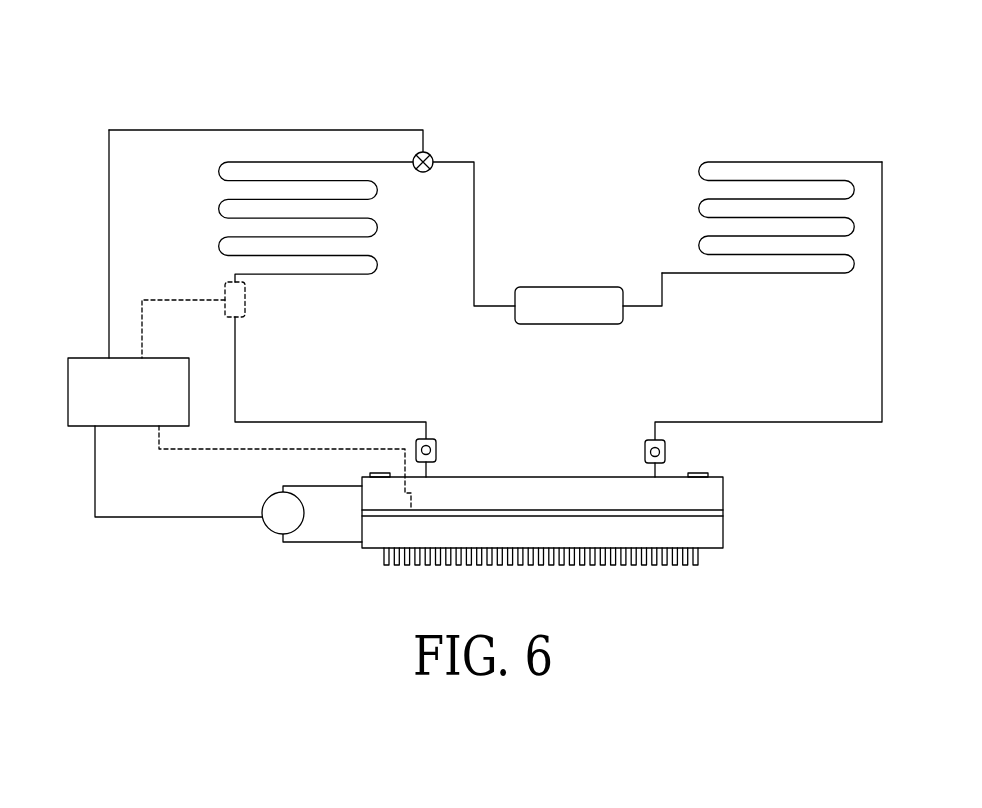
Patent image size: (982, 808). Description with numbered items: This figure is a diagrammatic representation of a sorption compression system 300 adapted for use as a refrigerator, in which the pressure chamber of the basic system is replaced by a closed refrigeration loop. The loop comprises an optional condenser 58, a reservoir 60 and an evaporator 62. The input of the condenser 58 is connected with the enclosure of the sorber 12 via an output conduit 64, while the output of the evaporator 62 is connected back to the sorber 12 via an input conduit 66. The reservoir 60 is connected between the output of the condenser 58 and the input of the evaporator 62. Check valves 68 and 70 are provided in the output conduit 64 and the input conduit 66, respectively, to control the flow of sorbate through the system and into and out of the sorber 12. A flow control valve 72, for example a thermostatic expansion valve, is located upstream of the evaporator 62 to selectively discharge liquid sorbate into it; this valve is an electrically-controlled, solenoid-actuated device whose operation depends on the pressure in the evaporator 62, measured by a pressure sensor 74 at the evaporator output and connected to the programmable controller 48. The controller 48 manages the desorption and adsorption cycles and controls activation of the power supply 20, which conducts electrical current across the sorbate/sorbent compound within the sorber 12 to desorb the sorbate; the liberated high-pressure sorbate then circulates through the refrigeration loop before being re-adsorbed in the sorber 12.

The sorption compression system 300 is at (643, 83).
The flow control valve 72 is at (432, 154).
The evaporator 62 is at (352, 282).
The pressure sensor 74 is at (245, 300).
The programmable controller 48 is at (113, 409).
The input conduit 66 is at (327, 421).
The check valve 70 is at (437, 457).
The power supply 20 is at (268, 528).
The sorber 12 is at (516, 478).
The reservoir 60 is at (548, 287).
The condenser 58 is at (793, 158).
The output conduit 64 is at (745, 422).
The check valve 68 is at (666, 452).